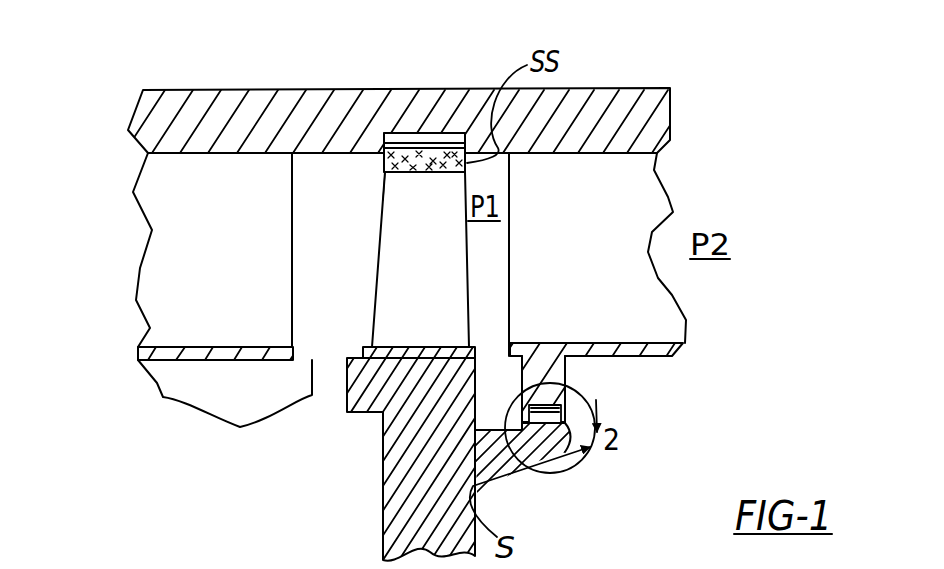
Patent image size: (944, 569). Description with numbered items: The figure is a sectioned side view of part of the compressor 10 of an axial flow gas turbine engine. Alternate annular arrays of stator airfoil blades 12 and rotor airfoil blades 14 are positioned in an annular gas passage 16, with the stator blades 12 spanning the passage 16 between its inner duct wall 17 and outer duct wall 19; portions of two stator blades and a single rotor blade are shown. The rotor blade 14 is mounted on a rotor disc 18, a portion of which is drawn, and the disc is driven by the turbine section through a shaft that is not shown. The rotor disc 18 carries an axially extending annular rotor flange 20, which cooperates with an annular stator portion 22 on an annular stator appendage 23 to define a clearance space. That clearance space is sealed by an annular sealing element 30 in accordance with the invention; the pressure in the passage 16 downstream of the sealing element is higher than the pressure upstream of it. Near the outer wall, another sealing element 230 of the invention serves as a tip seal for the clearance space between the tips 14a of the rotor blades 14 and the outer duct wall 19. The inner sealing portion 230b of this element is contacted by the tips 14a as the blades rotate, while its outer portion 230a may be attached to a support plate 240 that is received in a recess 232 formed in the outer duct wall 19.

The compressor 10 is at (477, 78).
The stator airfoil blades 12 is at (178, 262).
The rotor airfoil blades 14 is at (440, 208).
The tips 14a is at (388, 180).
The annular gas passage 16 is at (342, 167).
The inner duct wall 17 is at (187, 347).
The rotor disc 18 is at (398, 455).
The outer duct wall 19 is at (268, 118).
The annular rotor flange 20 is at (530, 440).
The annular stator portion 22 is at (570, 424).
The annular stator appendage 23 is at (553, 362).
The annular sealing element 30 is at (551, 432).
The sealing element 230 is at (362, 136).
The outer portion 230a is at (383, 160).
The inner sealing portion 230b is at (412, 173).
The recess 232 is at (397, 140).
The support plate 240 is at (416, 135).